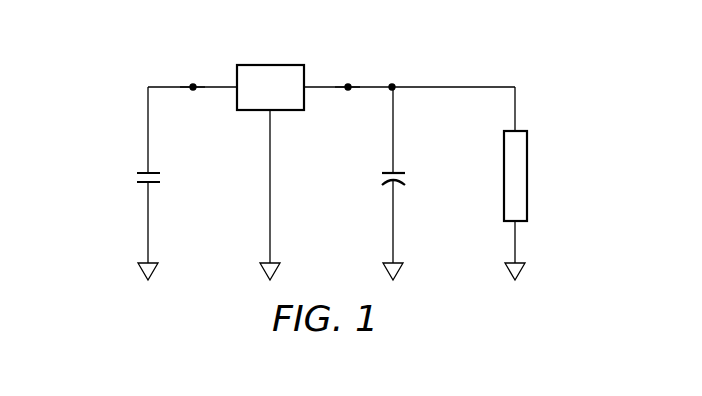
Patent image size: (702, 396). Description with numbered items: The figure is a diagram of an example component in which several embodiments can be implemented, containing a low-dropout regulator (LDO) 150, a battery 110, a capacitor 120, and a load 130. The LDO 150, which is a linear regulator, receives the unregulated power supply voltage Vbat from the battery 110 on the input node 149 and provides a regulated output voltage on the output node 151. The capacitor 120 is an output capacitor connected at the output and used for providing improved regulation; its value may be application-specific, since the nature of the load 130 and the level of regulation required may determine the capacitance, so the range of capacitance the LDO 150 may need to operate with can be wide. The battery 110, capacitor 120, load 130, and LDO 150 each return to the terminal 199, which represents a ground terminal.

The battery 110 is at (136, 177).
The capacitor 120 is at (408, 176).
The load 130 is at (528, 176).
The input node 149 is at (193, 84).
The low-dropout regulator (LDO) 150 is at (270, 64).
The output node 151 is at (348, 84).
The terminal 199 is at (145, 272).